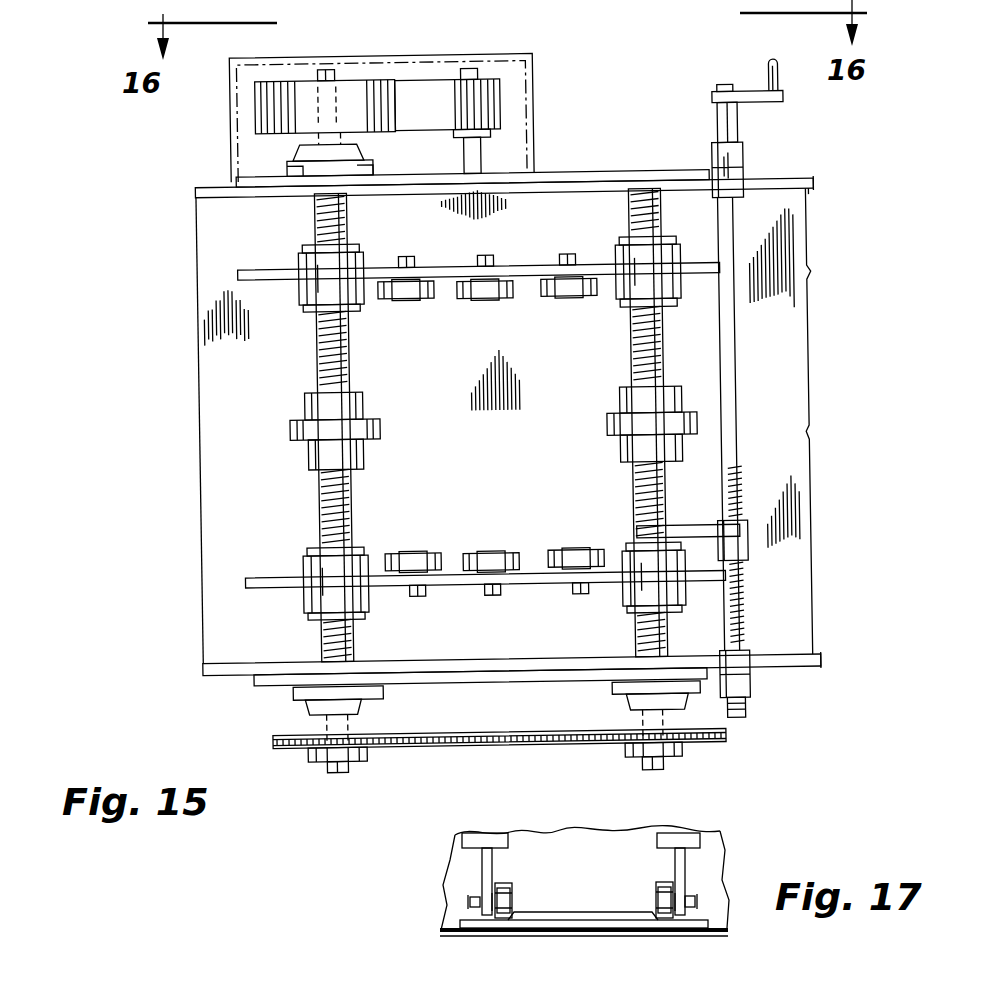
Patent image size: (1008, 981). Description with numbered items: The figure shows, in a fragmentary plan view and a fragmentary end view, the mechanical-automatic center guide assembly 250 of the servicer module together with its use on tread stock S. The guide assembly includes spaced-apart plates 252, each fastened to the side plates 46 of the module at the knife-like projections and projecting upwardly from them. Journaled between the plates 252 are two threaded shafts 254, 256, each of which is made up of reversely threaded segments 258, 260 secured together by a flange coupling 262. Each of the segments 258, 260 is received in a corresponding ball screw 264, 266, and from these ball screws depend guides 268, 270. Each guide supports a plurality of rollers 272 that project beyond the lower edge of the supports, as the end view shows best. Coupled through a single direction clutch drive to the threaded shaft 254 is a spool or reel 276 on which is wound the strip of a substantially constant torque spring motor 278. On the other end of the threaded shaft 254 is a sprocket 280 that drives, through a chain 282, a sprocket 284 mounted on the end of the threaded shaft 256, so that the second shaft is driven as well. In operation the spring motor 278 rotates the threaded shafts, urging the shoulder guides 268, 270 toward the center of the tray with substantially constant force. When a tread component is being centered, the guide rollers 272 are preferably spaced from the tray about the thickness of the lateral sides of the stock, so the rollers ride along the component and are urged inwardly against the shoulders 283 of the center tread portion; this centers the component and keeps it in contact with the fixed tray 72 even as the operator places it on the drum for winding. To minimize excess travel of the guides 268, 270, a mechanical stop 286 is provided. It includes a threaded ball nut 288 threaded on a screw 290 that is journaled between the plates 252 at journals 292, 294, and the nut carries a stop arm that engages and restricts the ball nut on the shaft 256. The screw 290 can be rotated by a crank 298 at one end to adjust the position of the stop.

In FIG. 15, the side plates 46 is at (800, 183).
In FIG. 17, the fixed tray 72 is at (712, 938).
In FIG. 17, the strip S is at (622, 925).
In FIG. 15, the mechanical-automatic center guide assembly 250 is at (198, 642).
In FIG. 15, the spaced-apart plates 252 is at (246, 172).
In FIG. 15, the threaded shaft 254 is at (312, 515).
In FIG. 15, the threaded shaft 256 is at (624, 476).
In FIG. 15, the reversely threaded segment 258 is at (352, 363).
In FIG. 15, the reversely threaded segment 260 is at (352, 500).
In FIG. 15, the flange coupling 262 is at (388, 425).
In FIG. 15, the ball screw 264 is at (620, 290).
In FIG. 17, the ball screw 264 is at (478, 838).
In FIG. 15, the ball screw 266 is at (318, 600).
In FIG. 17, the ball screw 266 is at (690, 836).
In FIG. 15, the guide 268 is at (266, 266).
In FIG. 17, the guide 268 is at (482, 870).
In FIG. 15, the guide 270 is at (268, 574).
In FIG. 17, the guide 270 is at (690, 866).
In FIG. 15, the rollers 272 is at (430, 300).
In FIG. 17, the rollers 272 is at (510, 885).
In FIG. 15, the spool or reel 276 is at (372, 80).
In FIG. 15, the constant torque spring motor 278 is at (490, 82).
In FIG. 15, the sprocket 280 is at (292, 748).
In FIG. 15, the chain 282 is at (470, 732).
In FIG. 17, the shoulders 283 is at (518, 922).
In FIG. 15, the sprocket 284 is at (690, 752).
In FIG. 15, the mechanical stop 286 is at (752, 389).
In FIG. 15, the threaded ball nut 288 is at (748, 540).
In FIG. 15, the screw 290 is at (735, 463).
In FIG. 15, the journal 292 is at (748, 690).
In FIG. 15, the journal 294 is at (750, 150).
In FIG. 15, the crank 298 is at (752, 95).